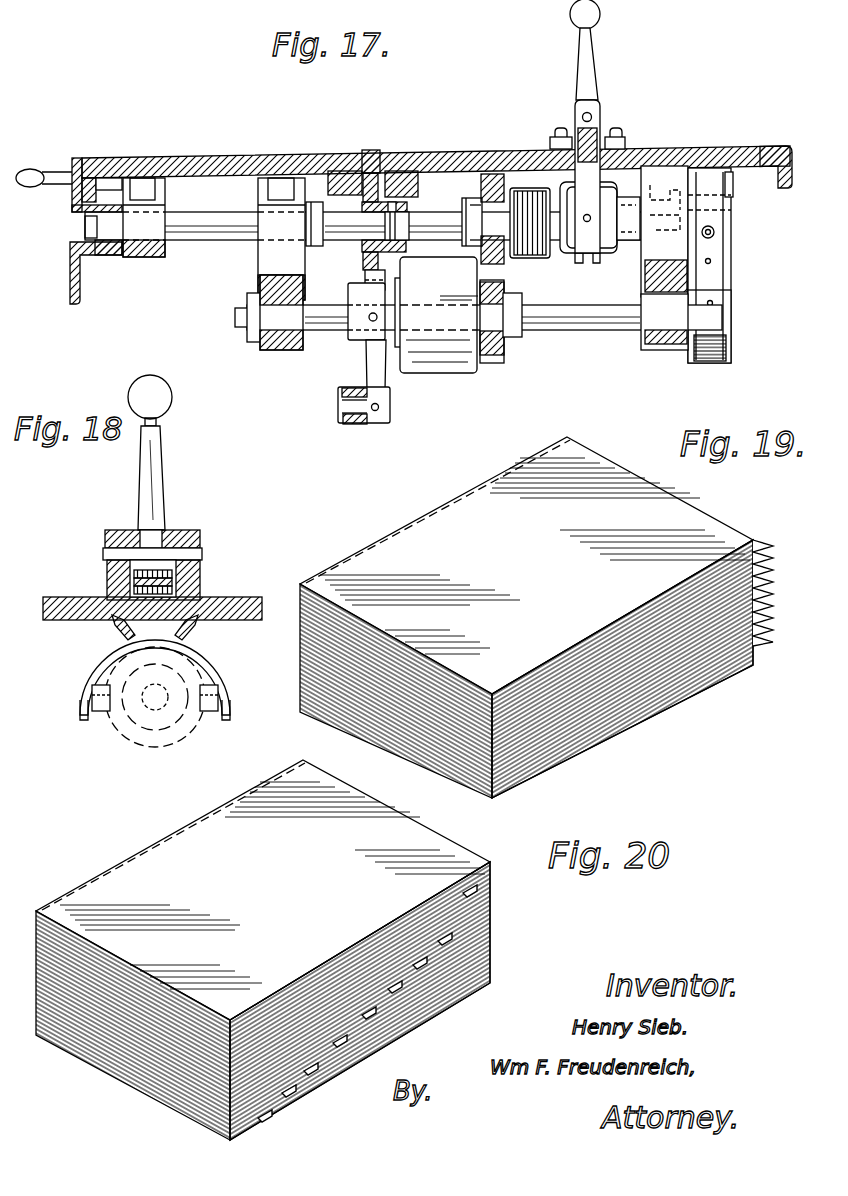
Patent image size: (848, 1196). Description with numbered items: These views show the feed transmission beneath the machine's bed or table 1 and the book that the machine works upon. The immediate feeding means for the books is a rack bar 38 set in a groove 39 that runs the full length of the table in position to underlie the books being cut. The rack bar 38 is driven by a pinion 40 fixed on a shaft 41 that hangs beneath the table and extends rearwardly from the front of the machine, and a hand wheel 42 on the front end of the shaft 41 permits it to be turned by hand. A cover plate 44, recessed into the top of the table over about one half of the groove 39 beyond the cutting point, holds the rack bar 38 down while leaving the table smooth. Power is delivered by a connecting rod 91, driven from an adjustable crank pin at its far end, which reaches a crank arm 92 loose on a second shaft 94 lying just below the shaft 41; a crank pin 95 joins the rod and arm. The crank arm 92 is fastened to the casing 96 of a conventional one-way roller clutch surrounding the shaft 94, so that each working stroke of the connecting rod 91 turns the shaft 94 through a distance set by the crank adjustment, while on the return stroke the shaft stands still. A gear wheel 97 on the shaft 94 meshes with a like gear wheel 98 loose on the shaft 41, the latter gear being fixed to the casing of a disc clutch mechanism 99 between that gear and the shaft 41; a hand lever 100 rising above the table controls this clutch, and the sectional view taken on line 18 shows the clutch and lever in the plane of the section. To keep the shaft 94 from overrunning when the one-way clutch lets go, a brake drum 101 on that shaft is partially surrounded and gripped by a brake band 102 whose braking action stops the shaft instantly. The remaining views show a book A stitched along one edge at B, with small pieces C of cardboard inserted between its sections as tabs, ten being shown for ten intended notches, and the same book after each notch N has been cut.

In FIG. 17, the bed or table 1 is at (741, 146).
In FIG. 18, the bed or table 1 is at (221, 597).
In FIG. 17, the section line 18— 18 is at (587, 287).
In FIG. 17, the rack bar 38 is at (374, 164).
In FIG. 17, the groove 39 is at (345, 172).
In FIG. 17, the pinion 40 is at (361, 243).
In FIG. 17, the shaft 41 is at (216, 240).
In FIG. 17, the hand wheel 42 is at (72, 262).
In FIG. 17, the cover plate 44 is at (357, 163).
In FIG. 17, the connecting rod 91 is at (351, 426).
In FIG. 17, the crank arm 92 is at (367, 365).
In FIG. 17, the shaft 94 is at (333, 322).
In FIG. 17, the crank pin 95 is at (340, 407).
In FIG. 17, the clutch casing 96 is at (447, 364).
In FIG. 17, the gear wheel 97 is at (493, 362).
In FIG. 17, the gear wheel 98 is at (487, 174).
In FIG. 17, the clutch mechanism 99 is at (560, 190).
In FIG. 18, the clutch mechanism 99 is at (110, 730).
In FIG. 17, the hand lever 100 is at (597, 78).
In FIG. 18, the hand lever 100 is at (166, 483).
In FIG. 17, the brake drum 101 is at (733, 308).
In FIG. 17, the brake band 102 is at (728, 252).
In FIG. 19, the book A is at (600, 470).
In FIG. 20, the book A is at (257, 806).
In FIG. 19, the stitched edge B is at (412, 516).
In FIG. 20, the stitched edge B is at (150, 856).
In FIG. 19, the pieces of cardboard C is at (758, 546).
In FIG. 20, the notch N is at (480, 892).